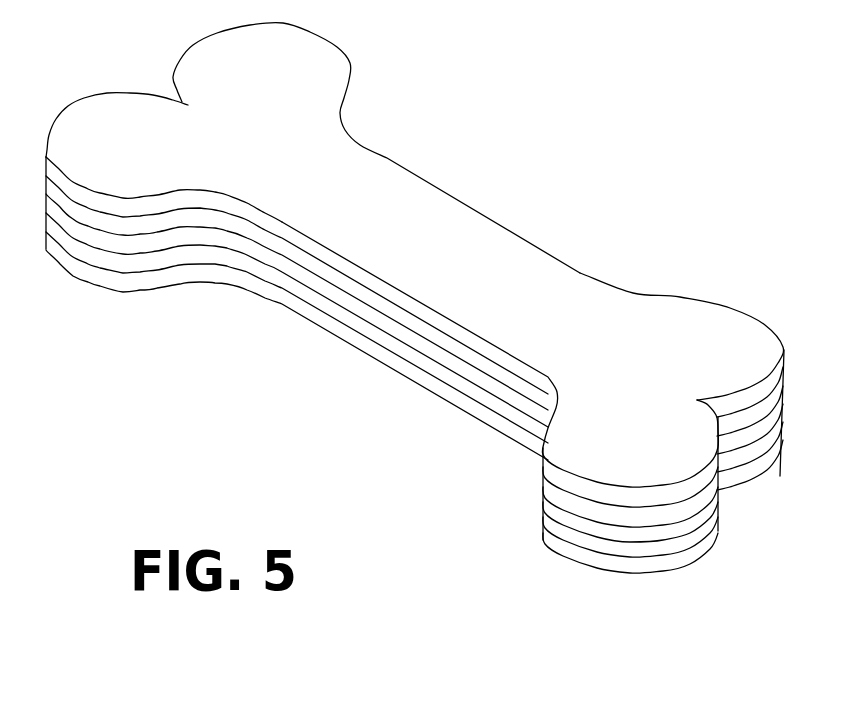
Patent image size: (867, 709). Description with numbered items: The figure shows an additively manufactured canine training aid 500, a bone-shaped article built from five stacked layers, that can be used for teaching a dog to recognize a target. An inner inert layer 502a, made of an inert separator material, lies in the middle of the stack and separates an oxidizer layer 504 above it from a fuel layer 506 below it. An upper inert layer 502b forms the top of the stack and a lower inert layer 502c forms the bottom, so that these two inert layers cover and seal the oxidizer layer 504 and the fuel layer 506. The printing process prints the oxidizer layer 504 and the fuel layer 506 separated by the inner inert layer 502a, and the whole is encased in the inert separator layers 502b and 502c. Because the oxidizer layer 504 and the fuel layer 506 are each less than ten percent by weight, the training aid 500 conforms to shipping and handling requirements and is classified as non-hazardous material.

The training aid 500 is at (550, 178).
The inner inert layer 502a is at (437, 353).
The upper inert layer 502b is at (530, 378).
The lower inert layer 502c is at (302, 310).
The oxidizer layer 504 is at (490, 368).
The fuel layer 506 is at (370, 330).